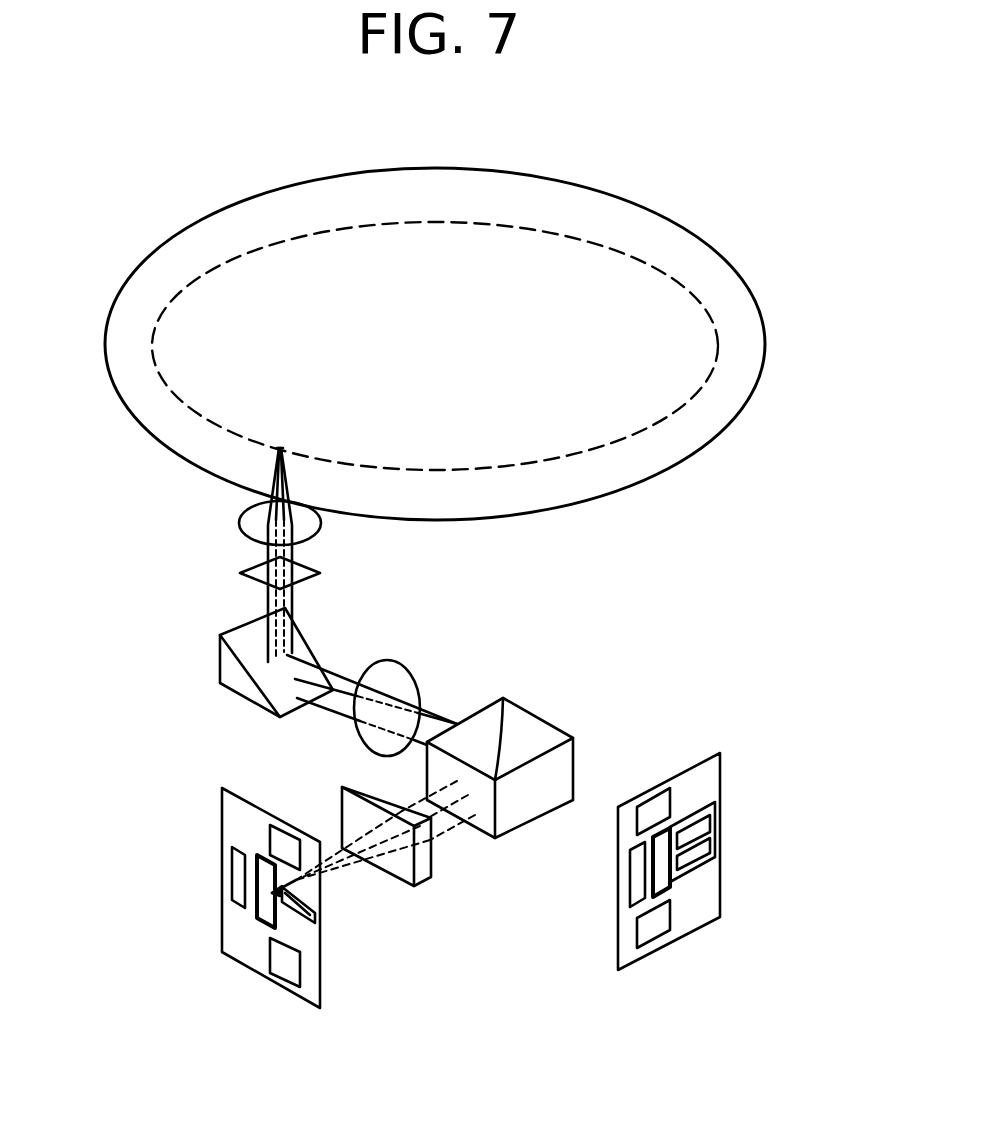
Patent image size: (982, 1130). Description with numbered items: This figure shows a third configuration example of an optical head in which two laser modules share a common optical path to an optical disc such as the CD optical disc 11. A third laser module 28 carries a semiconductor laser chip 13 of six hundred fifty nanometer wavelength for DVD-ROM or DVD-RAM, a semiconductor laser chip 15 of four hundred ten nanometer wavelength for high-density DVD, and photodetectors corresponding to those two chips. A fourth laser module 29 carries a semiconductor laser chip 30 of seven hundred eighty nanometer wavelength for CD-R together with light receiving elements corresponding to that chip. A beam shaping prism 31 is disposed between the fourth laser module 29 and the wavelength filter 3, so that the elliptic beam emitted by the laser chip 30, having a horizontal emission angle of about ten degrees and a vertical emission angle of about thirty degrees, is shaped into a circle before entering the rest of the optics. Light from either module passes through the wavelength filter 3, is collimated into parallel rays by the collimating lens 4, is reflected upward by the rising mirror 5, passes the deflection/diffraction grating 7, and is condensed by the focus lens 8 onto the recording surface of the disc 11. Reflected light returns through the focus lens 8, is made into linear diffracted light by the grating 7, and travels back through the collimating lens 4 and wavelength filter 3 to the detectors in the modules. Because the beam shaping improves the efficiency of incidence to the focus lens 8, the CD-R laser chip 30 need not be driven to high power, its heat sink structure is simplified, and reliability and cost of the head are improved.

The wavelength filter 3 is at (535, 720).
The collimating lens 4 is at (393, 664).
The rising mirror 5 is at (230, 665).
The deflection/diffraction grating 7 is at (250, 575).
The focus lens 8 is at (250, 523).
The CD optical disc 11 is at (720, 393).
The 650 nm wavelength semiconductor laser chip 13 is at (705, 848).
The 410 nm wavelength semiconductor laser chip 15 is at (710, 820).
The third laser module 28 is at (708, 770).
The fourth laser module 29 is at (312, 983).
The 780 nm wavelength semiconductor laser chip 30 is at (320, 922).
The beam shaping prism 31 is at (423, 872).